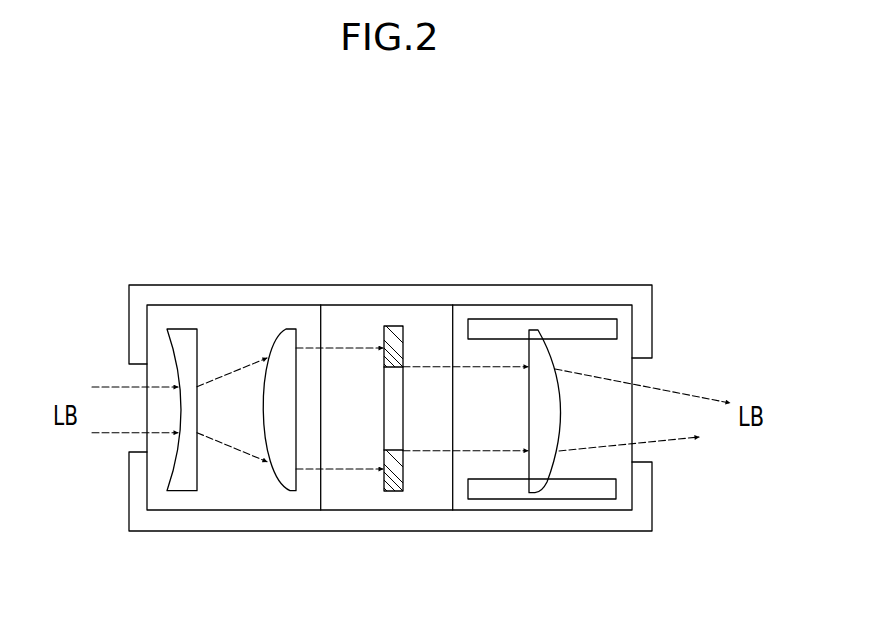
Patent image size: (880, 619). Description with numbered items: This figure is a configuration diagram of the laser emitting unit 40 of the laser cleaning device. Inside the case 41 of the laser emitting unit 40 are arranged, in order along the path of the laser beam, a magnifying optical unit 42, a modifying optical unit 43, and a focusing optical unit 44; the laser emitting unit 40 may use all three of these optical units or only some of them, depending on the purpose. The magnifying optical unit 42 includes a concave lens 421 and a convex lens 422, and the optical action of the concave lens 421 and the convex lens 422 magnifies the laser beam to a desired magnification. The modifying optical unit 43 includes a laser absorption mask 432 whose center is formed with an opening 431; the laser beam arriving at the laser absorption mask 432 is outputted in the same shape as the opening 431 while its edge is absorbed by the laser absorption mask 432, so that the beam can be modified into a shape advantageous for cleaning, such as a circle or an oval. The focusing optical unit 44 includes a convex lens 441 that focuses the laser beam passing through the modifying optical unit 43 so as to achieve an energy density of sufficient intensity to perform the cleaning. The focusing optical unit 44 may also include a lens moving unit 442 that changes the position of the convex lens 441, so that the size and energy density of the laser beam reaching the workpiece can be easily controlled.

The laser emitting unit 40 is at (398, 134).
The case 41 is at (317, 296).
The magnifying optical unit 42 is at (235, 408).
The modifying optical unit 43 is at (385, 406).
The focusing optical unit 44 is at (542, 407).
The concave lens 421 is at (183, 478).
The convex lens 422 is at (284, 478).
The opening 431 is at (387, 421).
The laser absorption mask 432 is at (395, 491).
The convex lens 441 is at (540, 467).
The lens moving unit 442 is at (490, 488).